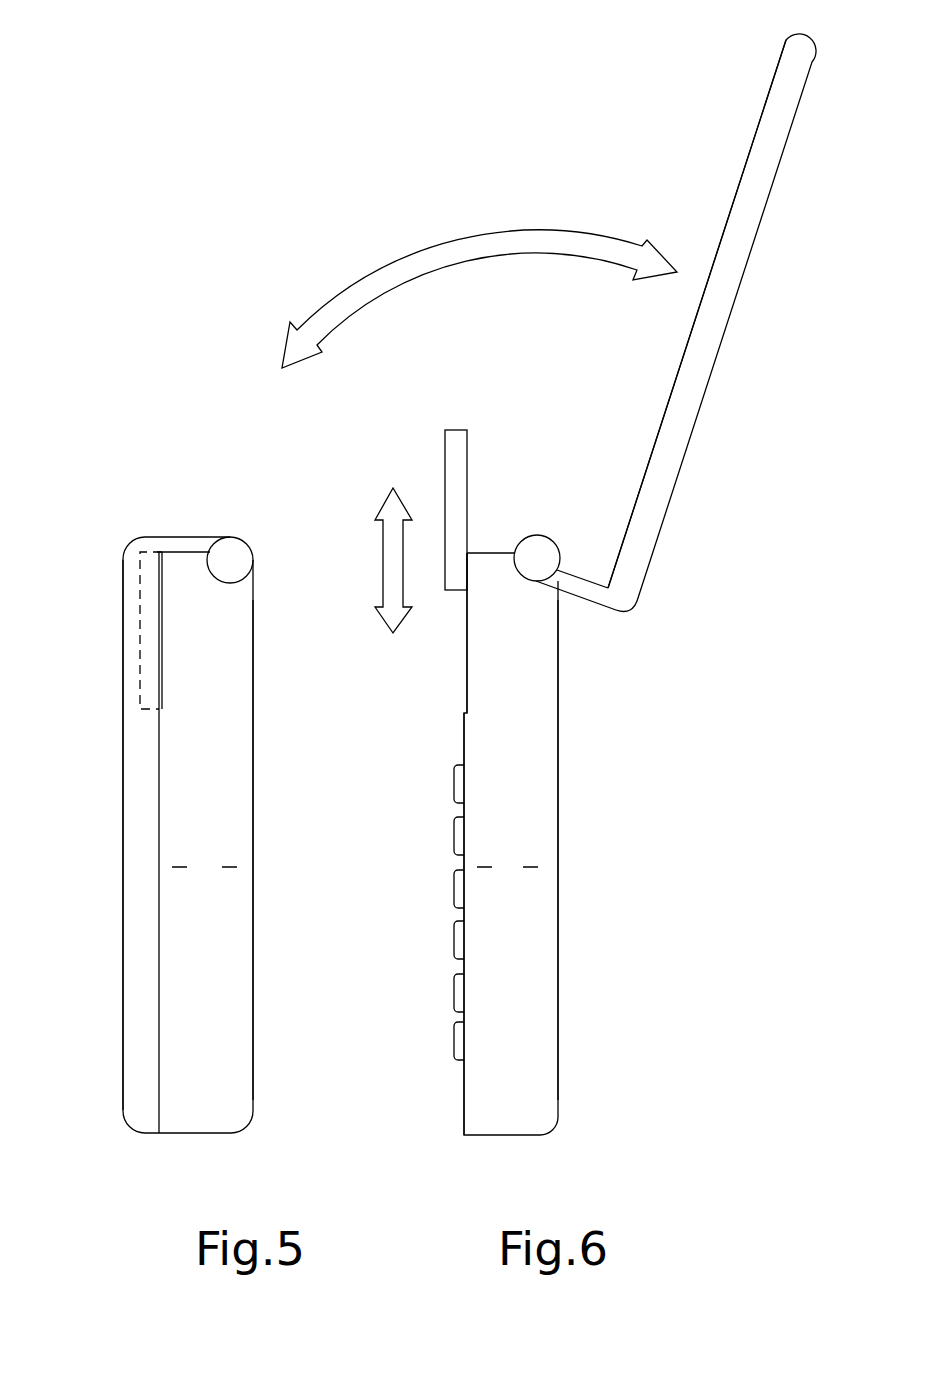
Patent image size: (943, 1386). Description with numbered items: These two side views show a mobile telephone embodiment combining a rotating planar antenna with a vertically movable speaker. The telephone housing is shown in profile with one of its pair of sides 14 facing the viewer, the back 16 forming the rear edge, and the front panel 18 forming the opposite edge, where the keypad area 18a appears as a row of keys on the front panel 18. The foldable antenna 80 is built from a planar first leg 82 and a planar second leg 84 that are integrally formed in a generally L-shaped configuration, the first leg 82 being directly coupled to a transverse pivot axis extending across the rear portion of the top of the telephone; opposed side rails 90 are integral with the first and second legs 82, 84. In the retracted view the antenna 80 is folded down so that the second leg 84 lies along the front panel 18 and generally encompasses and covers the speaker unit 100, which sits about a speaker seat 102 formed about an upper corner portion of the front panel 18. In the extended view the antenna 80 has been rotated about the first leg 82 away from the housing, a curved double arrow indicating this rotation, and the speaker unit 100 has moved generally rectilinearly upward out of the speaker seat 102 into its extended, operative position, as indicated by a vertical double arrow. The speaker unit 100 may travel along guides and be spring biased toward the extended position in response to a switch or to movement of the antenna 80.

In FIG. 5, the sides 14 is at (204, 867).
In FIG. 6, the sides 14 is at (507, 868).
In FIG. 5, the back 16 is at (255, 873).
In FIG. 6, the back 16 is at (558, 873).
In FIG. 6, the front panel 18 is at (464, 1078).
In FIG. 6, the keypad area 18a is at (460, 919).
In FIG. 5, the antenna 80 is at (100, 712).
In FIG. 6, the antenna 80 is at (697, 172).
In FIG. 5, the first leg 82 is at (179, 537).
In FIG. 6, the first leg 82 is at (582, 602).
In FIG. 5, the second leg 84 is at (122, 955).
In FIG. 6, the second leg 84 is at (760, 234).
In FIG. 5, the side rails 90 is at (135, 1033).
In FIG. 6, the side rails 90 is at (697, 370).
In FIG. 5, the speaker unit 100 is at (138, 614).
In FIG. 6, the speaker unit 100 is at (460, 453).
In FIG. 6, the speaker seat 102 is at (467, 645).